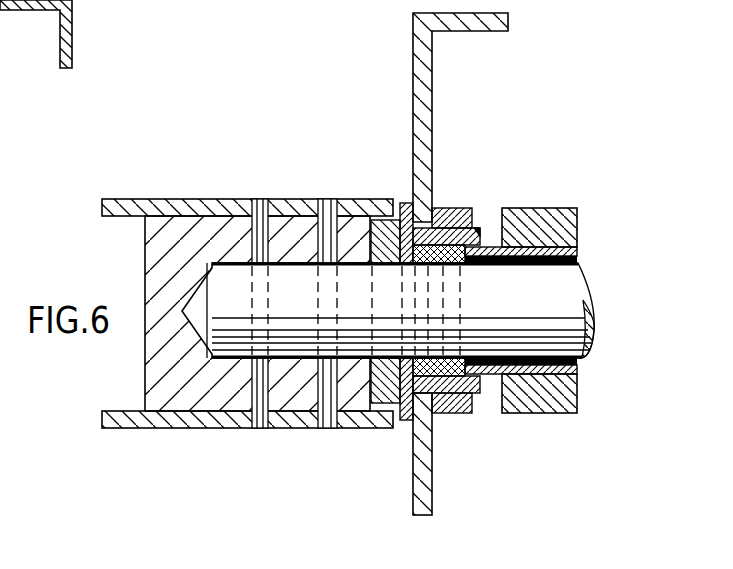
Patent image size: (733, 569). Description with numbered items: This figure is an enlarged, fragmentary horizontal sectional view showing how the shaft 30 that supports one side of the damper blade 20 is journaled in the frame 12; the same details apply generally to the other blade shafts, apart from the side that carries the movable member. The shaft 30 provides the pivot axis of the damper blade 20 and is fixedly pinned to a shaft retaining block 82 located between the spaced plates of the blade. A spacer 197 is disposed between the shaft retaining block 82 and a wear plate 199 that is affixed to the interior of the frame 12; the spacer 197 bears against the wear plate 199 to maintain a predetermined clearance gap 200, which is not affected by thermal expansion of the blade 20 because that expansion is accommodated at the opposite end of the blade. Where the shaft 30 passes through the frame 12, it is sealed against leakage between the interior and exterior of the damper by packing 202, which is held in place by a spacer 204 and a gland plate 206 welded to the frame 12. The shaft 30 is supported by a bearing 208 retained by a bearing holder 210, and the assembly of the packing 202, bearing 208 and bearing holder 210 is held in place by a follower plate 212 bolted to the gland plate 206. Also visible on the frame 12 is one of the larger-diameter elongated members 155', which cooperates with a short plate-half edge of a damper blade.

The frame 12 is at (412, 75).
The damper blade 20 is at (216, 291).
The shaft 30 is at (584, 264).
The shaft retaining block 82 is at (160, 199).
The elongated member 155' is at (36, 34).
The spacer 197 is at (384, 216).
The wear plate 199 is at (407, 202).
The clearance gap 200 is at (404, 426).
The packing 202 is at (447, 208).
The spacer 204 is at (450, 413).
The gland plate 206 is at (479, 228).
The bearing 208 is at (537, 250).
The bearing holder 210 is at (579, 370).
The follower plate 212 is at (563, 215).